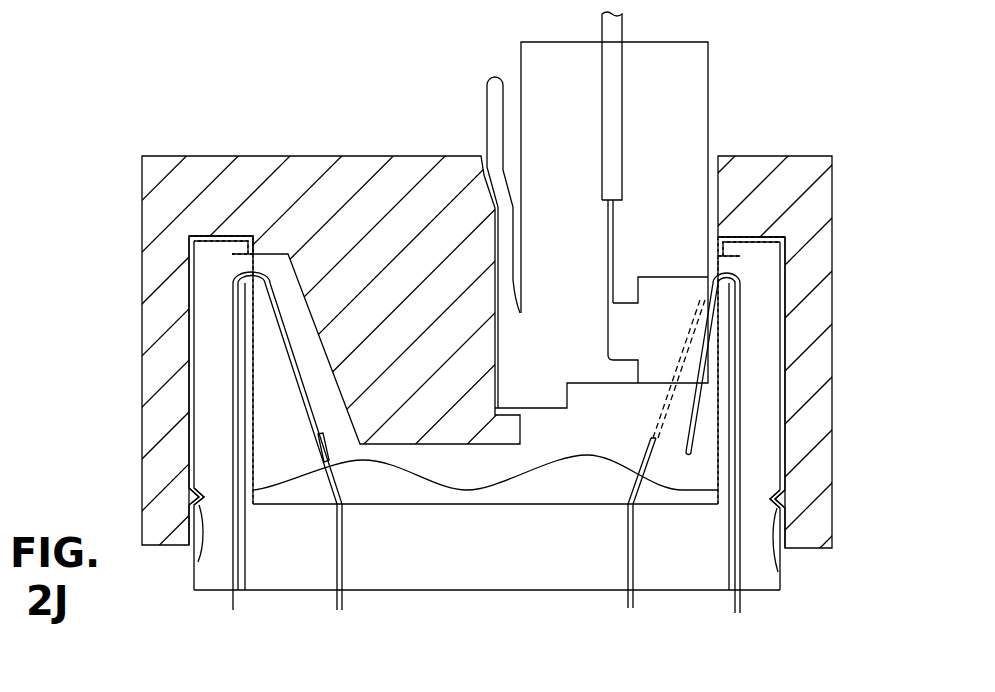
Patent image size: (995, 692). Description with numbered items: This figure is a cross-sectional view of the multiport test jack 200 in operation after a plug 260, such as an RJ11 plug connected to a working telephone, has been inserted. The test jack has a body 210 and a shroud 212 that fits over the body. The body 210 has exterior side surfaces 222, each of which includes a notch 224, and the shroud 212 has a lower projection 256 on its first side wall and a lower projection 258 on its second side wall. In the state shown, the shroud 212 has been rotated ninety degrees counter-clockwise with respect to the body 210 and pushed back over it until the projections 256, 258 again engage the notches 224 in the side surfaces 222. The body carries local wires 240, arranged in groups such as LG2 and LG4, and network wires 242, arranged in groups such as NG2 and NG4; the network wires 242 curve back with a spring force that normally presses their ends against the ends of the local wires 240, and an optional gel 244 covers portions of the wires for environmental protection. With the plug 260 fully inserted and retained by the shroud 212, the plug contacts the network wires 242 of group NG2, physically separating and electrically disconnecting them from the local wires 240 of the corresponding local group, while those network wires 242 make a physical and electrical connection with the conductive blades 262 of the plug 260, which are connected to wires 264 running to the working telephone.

The multiport test jack 200 is at (152, 135).
The body 210 is at (215, 591).
The shroud 212 is at (142, 215).
The exterior side surface 222 is at (188, 300).
The notch 224 is at (199, 561).
The local wire 240 is at (343, 573).
The network wire 242 is at (245, 554).
The gel 244 is at (250, 263).
The lower projection 256 is at (188, 497).
The lower projection 258 is at (786, 500).
The plug 260 is at (709, 84).
The conductive blade 262 is at (663, 284).
The wire 264 is at (614, 213).
The group of network wires NG4 is at (318, 436).
The group of local wires LG4 is at (336, 472).
The group of local wires LG2 is at (633, 492).
The group of network wires NG2 is at (697, 448).